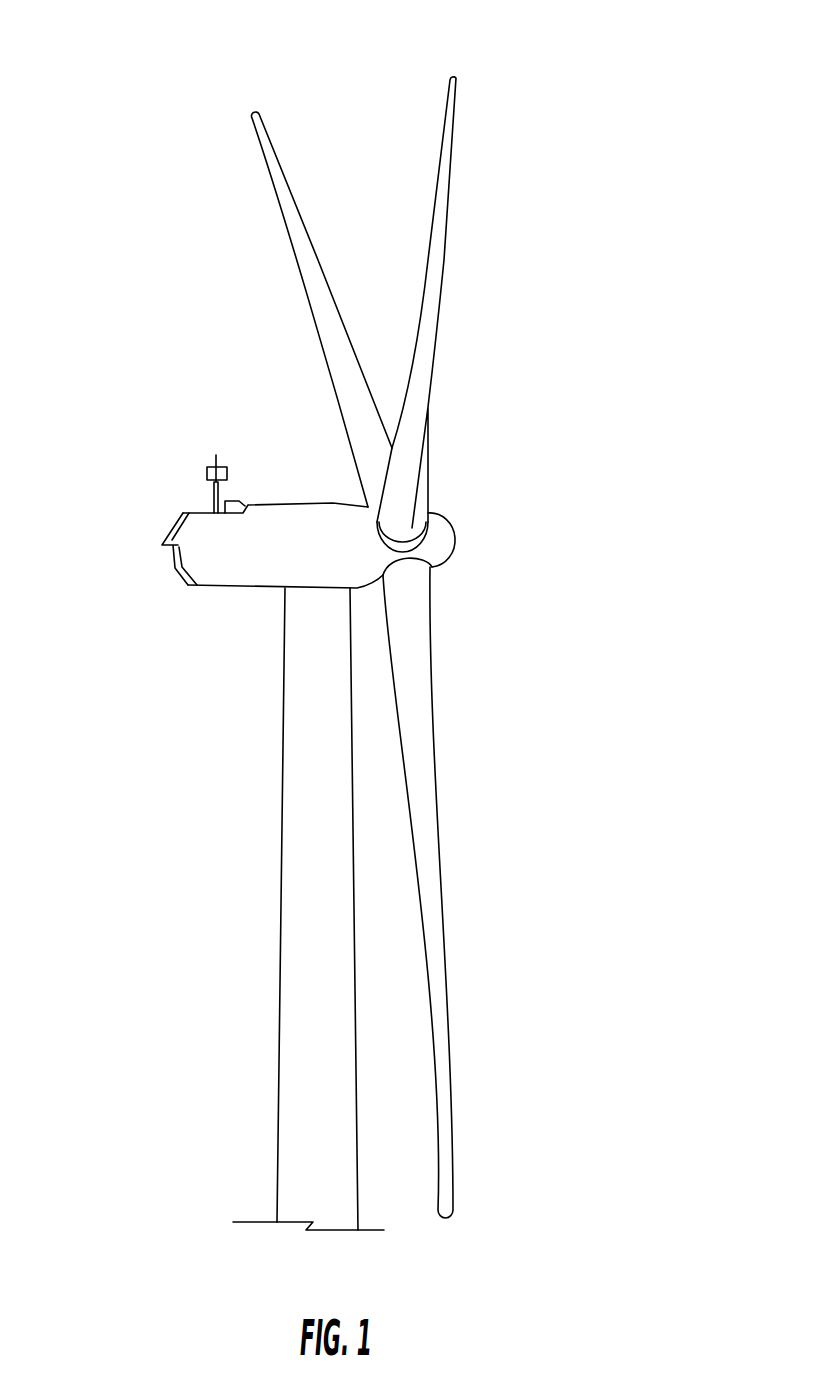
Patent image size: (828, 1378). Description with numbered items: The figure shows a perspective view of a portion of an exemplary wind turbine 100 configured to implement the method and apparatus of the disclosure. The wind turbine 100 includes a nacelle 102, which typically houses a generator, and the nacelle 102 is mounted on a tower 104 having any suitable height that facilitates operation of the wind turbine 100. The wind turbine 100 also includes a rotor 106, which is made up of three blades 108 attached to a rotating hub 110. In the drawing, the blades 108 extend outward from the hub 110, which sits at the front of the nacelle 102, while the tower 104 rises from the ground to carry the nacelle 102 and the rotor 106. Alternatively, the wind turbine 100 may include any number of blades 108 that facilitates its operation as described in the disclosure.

The wind turbine 100 is at (163, 80).
The nacelle 102 is at (222, 583).
The tower 104 is at (281, 878).
The rotor 106 is at (565, 308).
The blades 108 is at (302, 223).
The rotating hub 110 is at (453, 541).